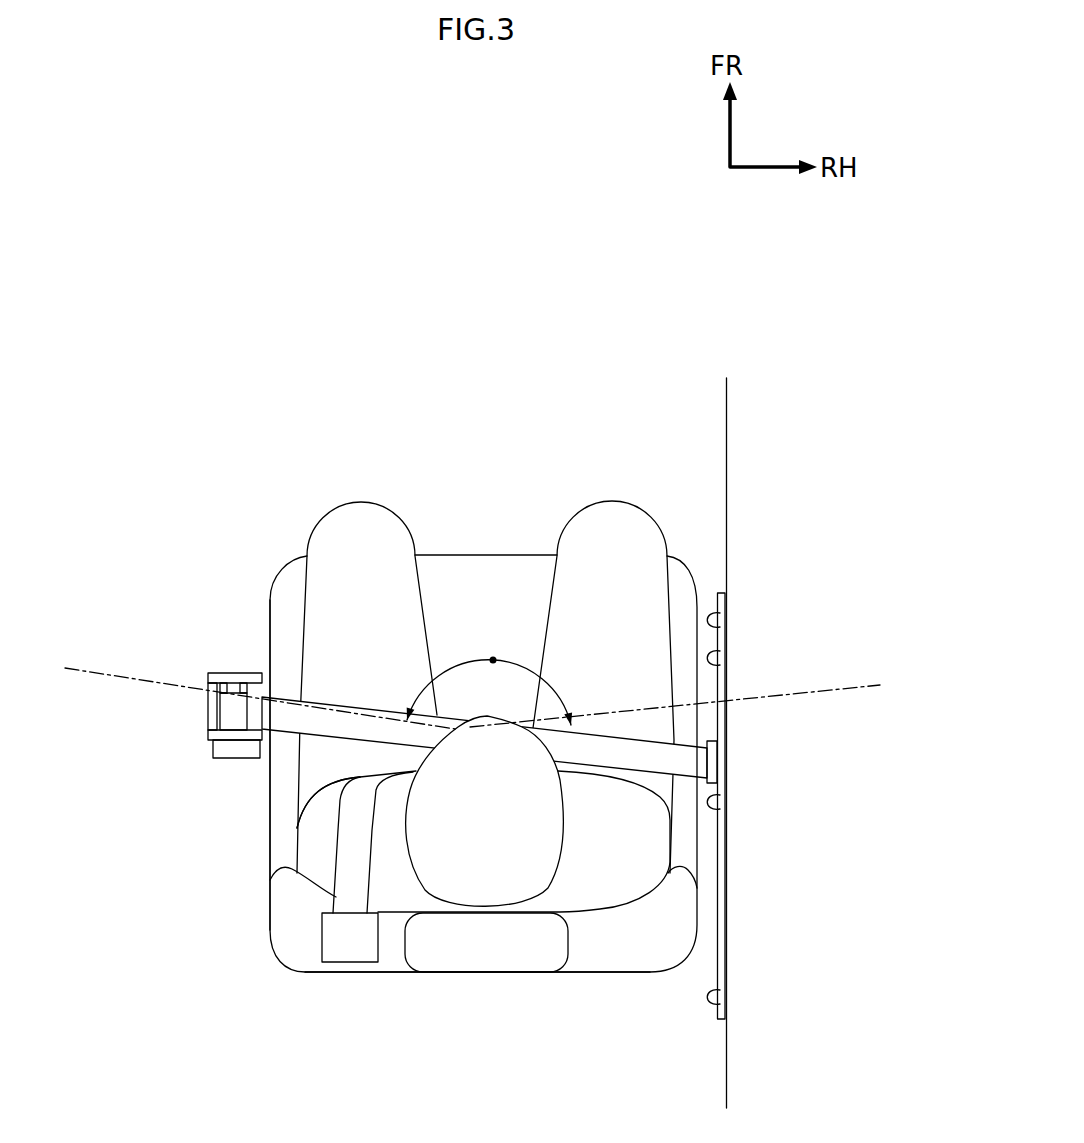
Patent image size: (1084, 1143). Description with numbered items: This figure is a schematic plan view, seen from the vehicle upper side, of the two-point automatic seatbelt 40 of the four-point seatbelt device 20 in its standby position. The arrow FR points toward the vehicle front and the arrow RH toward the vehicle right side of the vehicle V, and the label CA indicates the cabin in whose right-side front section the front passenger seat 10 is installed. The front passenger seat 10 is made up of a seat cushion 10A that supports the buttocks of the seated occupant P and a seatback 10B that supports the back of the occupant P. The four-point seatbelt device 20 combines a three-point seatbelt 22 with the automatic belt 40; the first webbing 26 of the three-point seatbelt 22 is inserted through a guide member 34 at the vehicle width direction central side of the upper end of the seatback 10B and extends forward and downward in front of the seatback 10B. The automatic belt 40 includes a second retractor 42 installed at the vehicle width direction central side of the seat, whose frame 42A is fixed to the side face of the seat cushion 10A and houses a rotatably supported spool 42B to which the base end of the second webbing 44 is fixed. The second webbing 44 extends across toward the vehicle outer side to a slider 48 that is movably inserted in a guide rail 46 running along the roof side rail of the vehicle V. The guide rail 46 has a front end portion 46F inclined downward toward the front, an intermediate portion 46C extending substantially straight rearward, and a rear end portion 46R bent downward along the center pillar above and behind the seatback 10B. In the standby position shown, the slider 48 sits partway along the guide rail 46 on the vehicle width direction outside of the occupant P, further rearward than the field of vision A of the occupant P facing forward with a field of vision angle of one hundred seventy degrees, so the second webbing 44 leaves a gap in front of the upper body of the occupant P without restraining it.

The front passenger seat 10 is at (270, 913).
The seat cushion 10A is at (270, 793).
The seatback 10B is at (610, 973).
The four-point seatbelt device 20 is at (470, 620).
The three-point seatbelt 22 is at (303, 957).
The first webbing 26 is at (330, 828).
The guide member 34 is at (355, 962).
The two-point automatic seatbelt 40 is at (388, 687).
The second retractor 42 is at (206, 742).
The frame 42A is at (203, 678).
The spool 42B is at (232, 712).
The second webbing 44 is at (350, 707).
The guide rail 46 is at (718, 666).
The front end portion 46F is at (718, 626).
The intermediate portion 46C is at (716, 810).
The rear end portion 46R is at (714, 1002).
The slider 48 is at (712, 763).
The field of vision A is at (493, 660).
The occupant P is at (655, 838).
The vehicle V is at (787, 373).
The cabin CA is at (173, 1040).